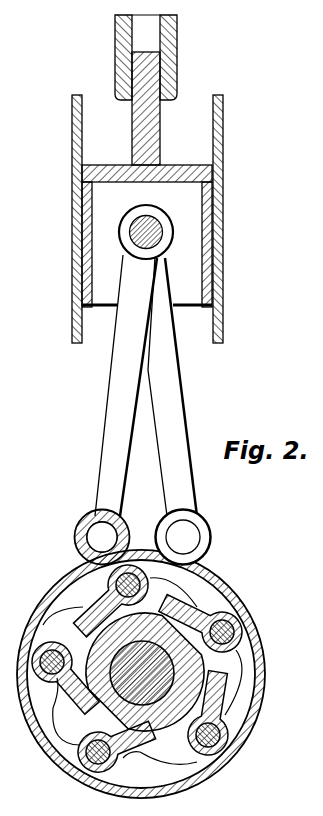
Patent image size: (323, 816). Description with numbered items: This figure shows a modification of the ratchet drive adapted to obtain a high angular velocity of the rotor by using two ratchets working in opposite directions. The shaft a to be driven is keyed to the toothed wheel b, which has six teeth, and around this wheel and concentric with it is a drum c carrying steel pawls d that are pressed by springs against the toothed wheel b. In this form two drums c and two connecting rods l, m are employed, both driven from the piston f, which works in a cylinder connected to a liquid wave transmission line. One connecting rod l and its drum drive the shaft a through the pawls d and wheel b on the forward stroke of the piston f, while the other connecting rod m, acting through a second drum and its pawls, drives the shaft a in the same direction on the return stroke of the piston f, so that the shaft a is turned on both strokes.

The piston f is at (197, 172).
The connecting rod l is at (113, 373).
The connecting rod m is at (175, 408).
The shaft a is at (167, 683).
The toothed wheel b is at (107, 717).
The drum c is at (230, 592).
The pawls d is at (66, 652).